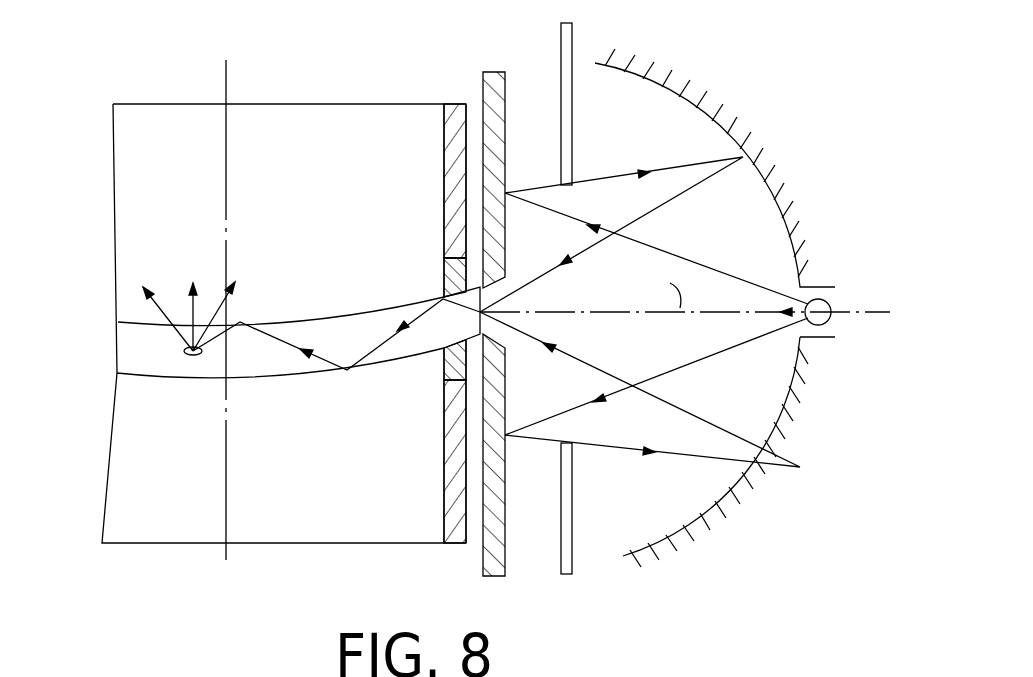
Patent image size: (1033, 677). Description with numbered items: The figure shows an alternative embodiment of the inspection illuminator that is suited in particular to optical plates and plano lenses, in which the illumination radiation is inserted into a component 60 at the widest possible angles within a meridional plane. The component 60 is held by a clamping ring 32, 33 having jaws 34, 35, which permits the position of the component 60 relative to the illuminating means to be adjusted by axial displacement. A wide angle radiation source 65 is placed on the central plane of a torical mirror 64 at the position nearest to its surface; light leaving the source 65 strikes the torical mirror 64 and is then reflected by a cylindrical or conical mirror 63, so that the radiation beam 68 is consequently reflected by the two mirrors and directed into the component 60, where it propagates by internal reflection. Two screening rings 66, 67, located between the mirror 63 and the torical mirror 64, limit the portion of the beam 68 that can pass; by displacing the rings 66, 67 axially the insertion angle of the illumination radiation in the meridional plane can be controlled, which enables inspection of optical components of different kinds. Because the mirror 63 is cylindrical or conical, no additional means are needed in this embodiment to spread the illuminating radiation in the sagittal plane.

The component 60 is at (132, 343).
The clamping ring 33 is at (444, 175).
The jaw 35 is at (444, 270).
The jaw 34 is at (450, 360).
The clamping ring 32 is at (444, 470).
The cylindrical or conical mirror 63 is at (483, 90).
The screening ring 66 is at (561, 53).
The screening ring 67 is at (573, 513).
The torical mirror 64 is at (680, 93).
The wide angle radiation source 65 is at (823, 305).
The radiation beam 68 is at (680, 425).